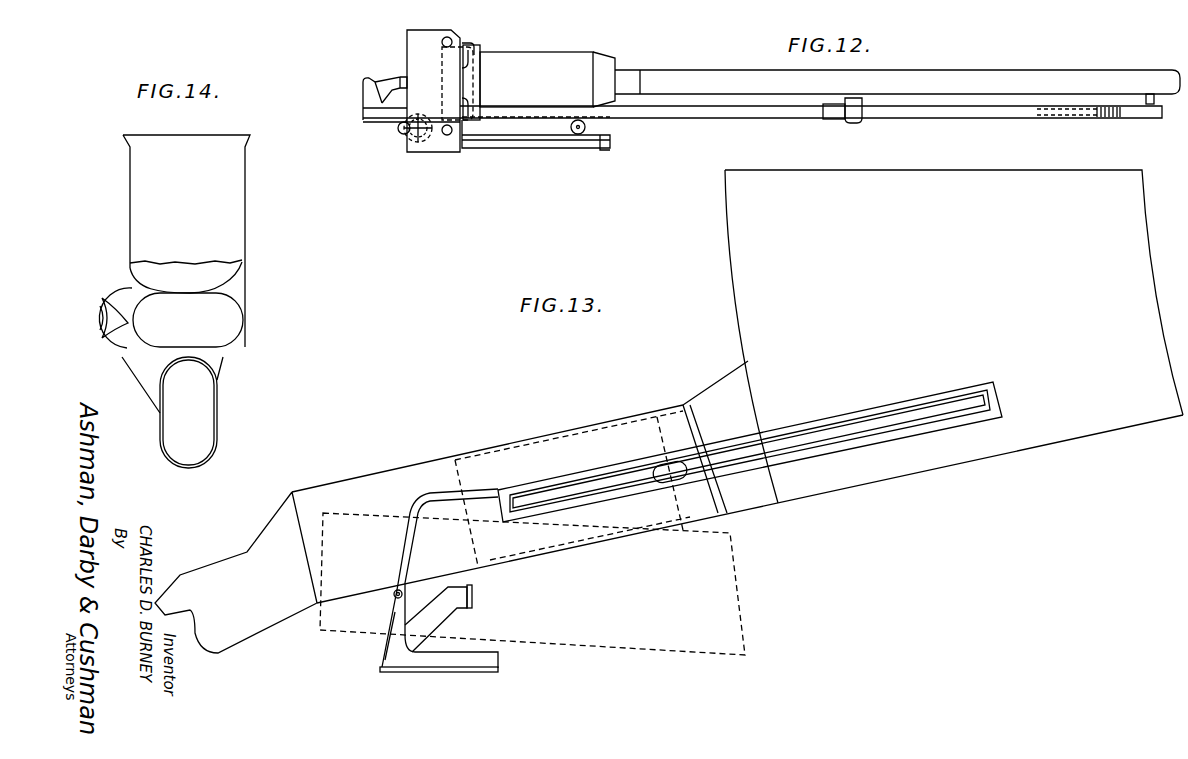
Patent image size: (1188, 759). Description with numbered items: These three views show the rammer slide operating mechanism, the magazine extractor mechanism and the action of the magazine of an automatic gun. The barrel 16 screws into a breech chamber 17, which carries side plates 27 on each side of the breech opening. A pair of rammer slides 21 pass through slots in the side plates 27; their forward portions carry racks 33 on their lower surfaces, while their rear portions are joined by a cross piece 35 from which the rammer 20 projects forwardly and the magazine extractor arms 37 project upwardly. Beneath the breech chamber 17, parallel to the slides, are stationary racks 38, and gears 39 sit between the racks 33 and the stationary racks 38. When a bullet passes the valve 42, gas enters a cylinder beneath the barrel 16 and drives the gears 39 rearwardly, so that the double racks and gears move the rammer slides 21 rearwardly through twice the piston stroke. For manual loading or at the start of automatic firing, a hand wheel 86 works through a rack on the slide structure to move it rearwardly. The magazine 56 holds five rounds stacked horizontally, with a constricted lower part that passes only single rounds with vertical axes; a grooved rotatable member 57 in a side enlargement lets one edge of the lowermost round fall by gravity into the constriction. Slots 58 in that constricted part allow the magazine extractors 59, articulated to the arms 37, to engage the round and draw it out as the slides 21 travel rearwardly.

In FIG. 12, the barrel 16 is at (692, 77).
In FIG. 12, the breech chamber 17 is at (597, 63).
In FIG. 12, the rammer 20 is at (380, 92).
In FIG. 13, the rammer 20 is at (443, 610).
In FIG. 12, the rammer slides 21 is at (695, 115).
In FIG. 13, the rammer slides 21 is at (483, 662).
In FIG. 12, the side plates 27 is at (418, 47).
In FIG. 12, the racks 33 is at (497, 123).
In FIG. 13, the cross piece 35 is at (387, 658).
In FIG. 12, the magazine extractor arms 37 is at (370, 80).
In FIG. 13, the magazine extractor arms 37 is at (393, 620).
In FIG. 12, the stationary racks 38 is at (528, 136).
In FIG. 12, the gears 39 is at (577, 134).
In FIG. 12, the valve 42 is at (1150, 104).
In FIG. 14, the magazine 56 is at (227, 203).
In FIG. 13, the magazine 56 is at (737, 245).
In FIG. 14, the rotatable member 57 is at (122, 325).
In FIG. 13, the slots 58 is at (792, 443).
In FIG. 13, the magazine extractors 59 is at (643, 475).
In FIG. 12, the hand wheel 86 is at (402, 133).